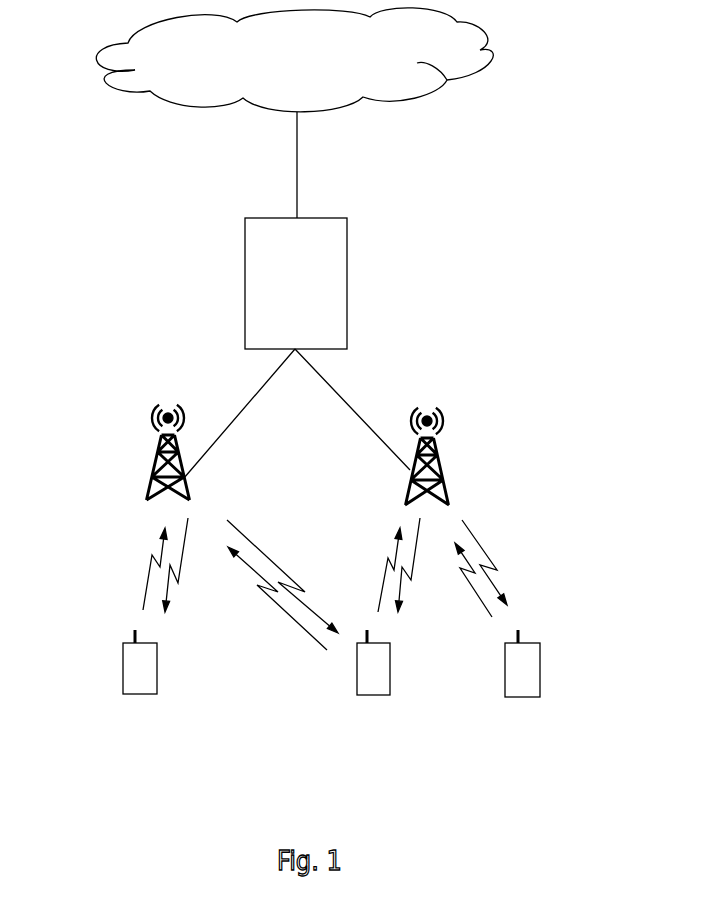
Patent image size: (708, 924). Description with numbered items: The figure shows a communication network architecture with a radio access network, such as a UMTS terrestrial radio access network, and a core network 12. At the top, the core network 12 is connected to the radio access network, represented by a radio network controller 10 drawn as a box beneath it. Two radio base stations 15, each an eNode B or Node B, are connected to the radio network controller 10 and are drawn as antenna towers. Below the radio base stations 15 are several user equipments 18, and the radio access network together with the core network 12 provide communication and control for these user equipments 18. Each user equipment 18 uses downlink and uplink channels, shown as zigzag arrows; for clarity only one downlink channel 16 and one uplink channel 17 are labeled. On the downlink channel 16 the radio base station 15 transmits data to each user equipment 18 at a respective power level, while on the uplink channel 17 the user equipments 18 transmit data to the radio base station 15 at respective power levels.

The radio network controller 10 is at (347, 277).
The core network 12 is at (500, 52).
The radio base station 15 is at (155, 462).
The downlink channel 16 is at (237, 523).
The uplink channel 17 is at (150, 568).
The user equipment 18 is at (123, 665).